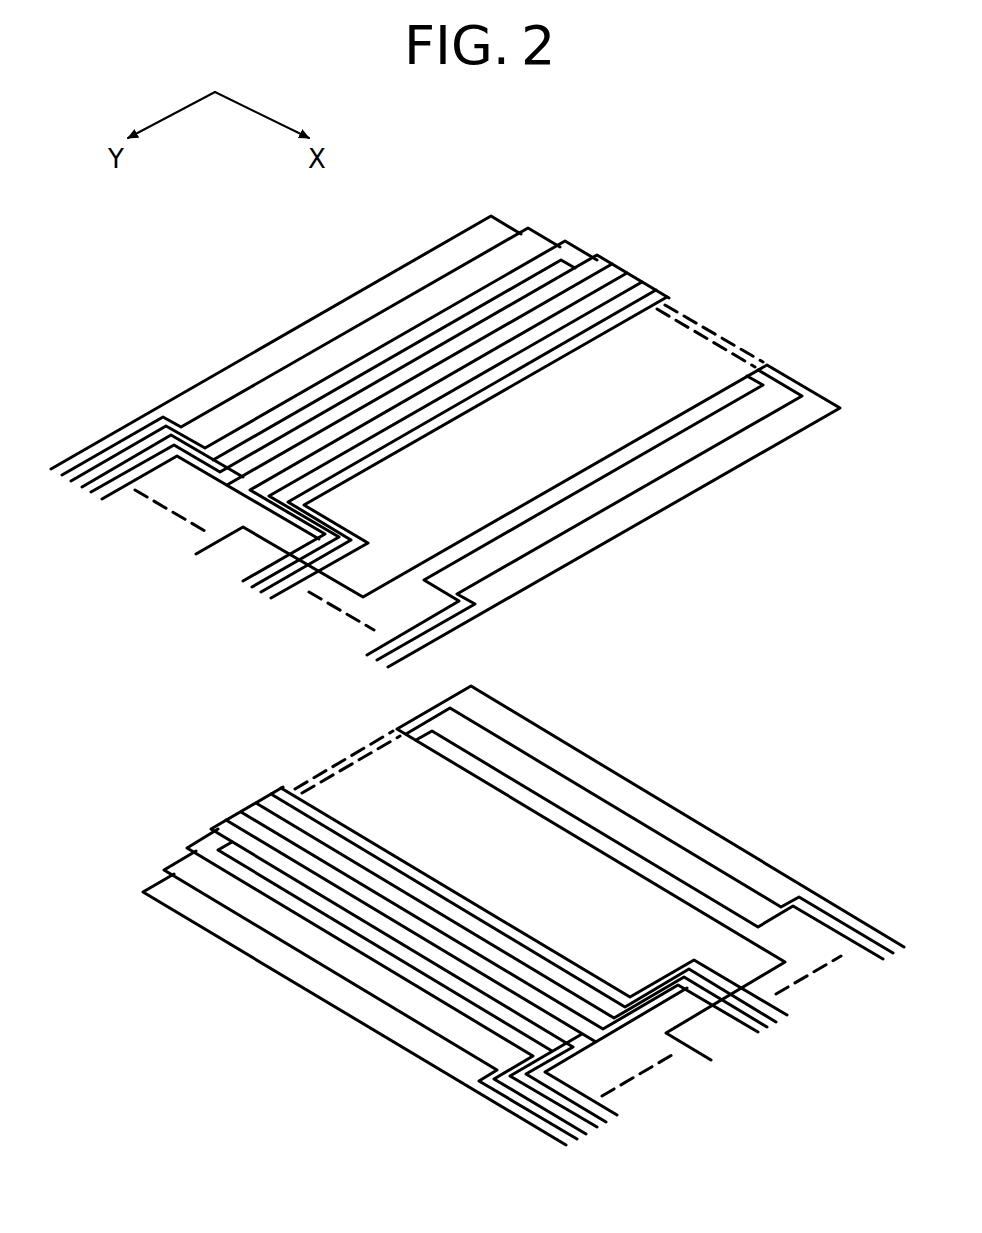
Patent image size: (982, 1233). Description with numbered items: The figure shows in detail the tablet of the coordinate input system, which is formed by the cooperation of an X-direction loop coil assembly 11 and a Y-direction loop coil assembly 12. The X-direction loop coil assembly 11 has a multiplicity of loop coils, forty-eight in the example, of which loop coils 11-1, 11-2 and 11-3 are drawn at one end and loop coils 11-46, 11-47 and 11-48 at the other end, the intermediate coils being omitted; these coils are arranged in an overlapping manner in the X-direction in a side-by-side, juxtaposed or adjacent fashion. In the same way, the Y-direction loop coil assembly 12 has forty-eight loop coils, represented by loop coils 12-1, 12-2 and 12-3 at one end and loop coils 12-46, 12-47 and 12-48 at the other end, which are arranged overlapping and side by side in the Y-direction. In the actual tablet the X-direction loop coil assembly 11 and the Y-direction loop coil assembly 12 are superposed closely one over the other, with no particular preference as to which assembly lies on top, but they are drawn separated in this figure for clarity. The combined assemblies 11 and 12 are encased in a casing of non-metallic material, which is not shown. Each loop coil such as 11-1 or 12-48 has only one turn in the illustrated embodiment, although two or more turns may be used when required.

The X-direction loop coil assembly 11 is at (703, 284).
The loop coil 11-1 is at (462, 231).
The loop coil 11-2 is at (543, 234).
The loop coil 11-3 is at (595, 258).
The loop coil 11-46 is at (656, 448).
The loop coil 11-47 is at (733, 450).
The loop coil 11-48 is at (789, 436).
The Y-direction loop coil assembly 12 is at (316, 1020).
The loop coil 12-1 is at (154, 883).
The loop coil 12-2 is at (164, 866).
The loop coil 12-3 is at (236, 815).
The loop coil 12-46 is at (660, 868).
The loop coil 12-47 is at (600, 802).
The loop coil 12-48 is at (536, 730).